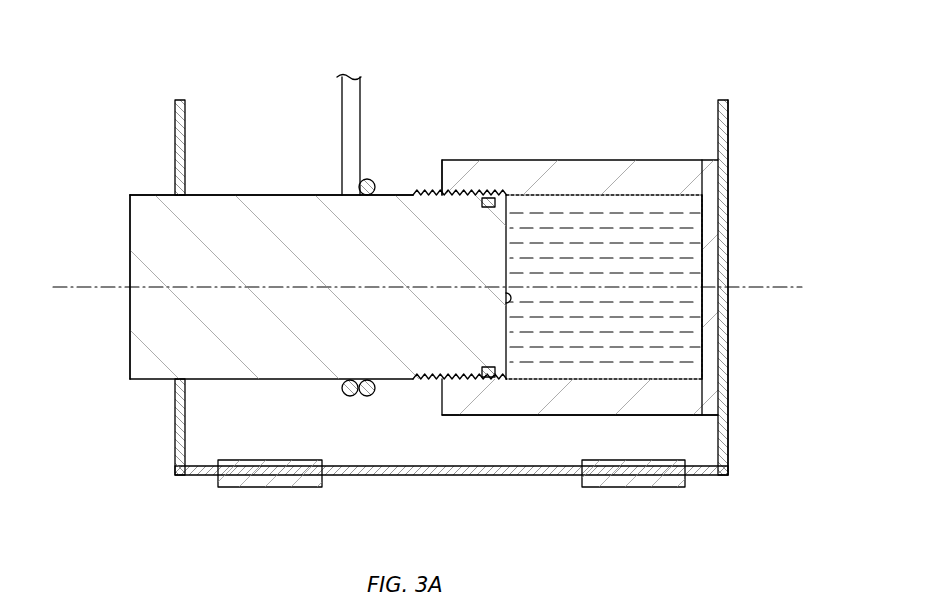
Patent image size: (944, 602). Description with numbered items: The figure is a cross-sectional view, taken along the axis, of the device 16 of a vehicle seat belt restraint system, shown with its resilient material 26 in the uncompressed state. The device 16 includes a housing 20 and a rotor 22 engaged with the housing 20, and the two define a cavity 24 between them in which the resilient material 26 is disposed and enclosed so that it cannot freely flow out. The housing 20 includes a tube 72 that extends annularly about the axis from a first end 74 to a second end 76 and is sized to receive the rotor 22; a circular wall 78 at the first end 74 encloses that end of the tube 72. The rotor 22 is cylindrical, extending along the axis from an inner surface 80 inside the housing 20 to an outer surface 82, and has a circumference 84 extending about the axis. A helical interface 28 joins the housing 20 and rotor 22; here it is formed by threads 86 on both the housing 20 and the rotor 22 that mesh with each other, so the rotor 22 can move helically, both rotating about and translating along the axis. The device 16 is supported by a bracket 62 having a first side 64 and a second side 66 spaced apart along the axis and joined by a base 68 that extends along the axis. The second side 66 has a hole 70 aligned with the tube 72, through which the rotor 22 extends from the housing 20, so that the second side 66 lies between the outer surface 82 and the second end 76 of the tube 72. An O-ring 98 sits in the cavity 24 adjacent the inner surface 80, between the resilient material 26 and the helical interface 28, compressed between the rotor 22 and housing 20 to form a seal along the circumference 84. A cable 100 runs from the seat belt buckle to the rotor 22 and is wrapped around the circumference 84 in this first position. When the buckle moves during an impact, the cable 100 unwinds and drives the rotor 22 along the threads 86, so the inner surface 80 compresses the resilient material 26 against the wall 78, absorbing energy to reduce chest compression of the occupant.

The device 16 is at (822, 54).
The housing 20 is at (586, 156).
The rotor 22 is at (247, 386).
The cavity 24 is at (641, 226).
The resilient material 26 is at (565, 246).
The helical interface 28 is at (468, 195).
The bracket 62 is at (723, 96).
The first side 64 is at (730, 136).
The second side 66 is at (175, 123).
The base 68 is at (378, 477).
The hole 70 is at (175, 384).
The tube 72 is at (601, 417).
The first end 74 is at (702, 177).
The second end 76 is at (442, 191).
The wall 78 is at (703, 233).
The inner surface 80 is at (506, 299).
The outer surface 82 is at (130, 236).
The circumference 84 is at (225, 195).
The threads 86 is at (430, 204).
The O-ring 98 is at (489, 381).
The cable 100 is at (369, 179).